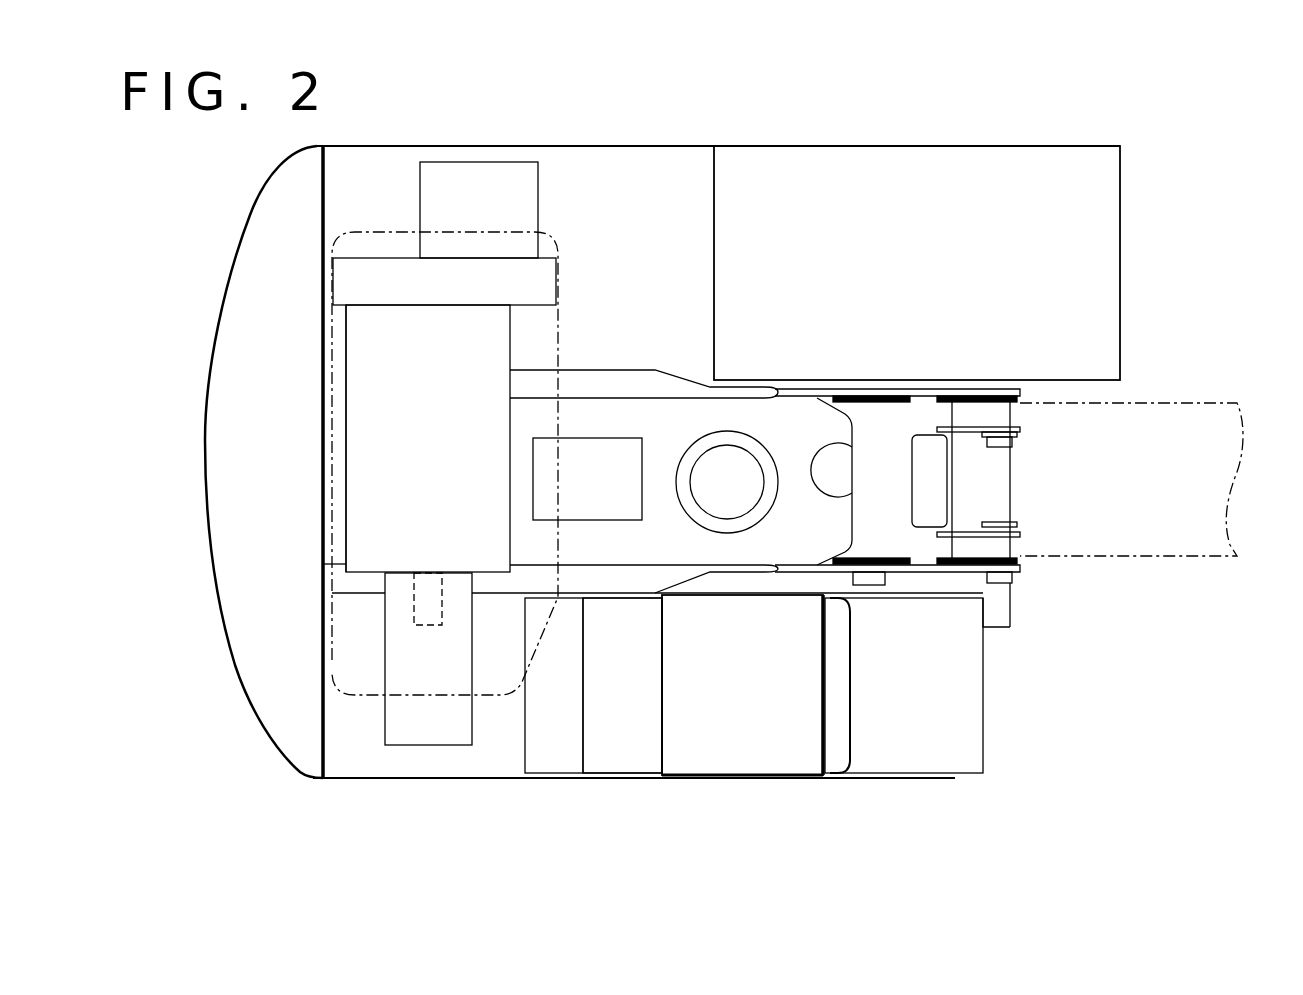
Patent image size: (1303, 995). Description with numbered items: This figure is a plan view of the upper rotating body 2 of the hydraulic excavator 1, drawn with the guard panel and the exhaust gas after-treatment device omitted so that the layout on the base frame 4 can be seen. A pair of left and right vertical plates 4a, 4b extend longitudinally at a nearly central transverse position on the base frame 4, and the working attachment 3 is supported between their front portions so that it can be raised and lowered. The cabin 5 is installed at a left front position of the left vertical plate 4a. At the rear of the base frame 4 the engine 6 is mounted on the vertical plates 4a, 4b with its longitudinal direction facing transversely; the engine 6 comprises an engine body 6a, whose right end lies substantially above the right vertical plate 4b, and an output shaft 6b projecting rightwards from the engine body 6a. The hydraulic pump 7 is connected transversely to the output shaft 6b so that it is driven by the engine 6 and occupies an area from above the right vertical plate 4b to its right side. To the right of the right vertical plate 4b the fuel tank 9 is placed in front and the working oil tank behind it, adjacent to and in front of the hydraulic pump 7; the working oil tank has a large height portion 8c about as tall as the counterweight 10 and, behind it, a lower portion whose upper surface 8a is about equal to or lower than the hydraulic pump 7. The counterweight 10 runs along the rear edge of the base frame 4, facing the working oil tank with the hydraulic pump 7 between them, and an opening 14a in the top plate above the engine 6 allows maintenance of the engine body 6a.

The hydraulic excavator 1 is at (1163, 148).
The upper rotating body 2 is at (996, 605).
The working attachment 3 is at (1197, 415).
The base frame 4 is at (650, 172).
The left vertical plate 4a is at (925, 388).
The right vertical plate 4b is at (940, 572).
The cabin 5 is at (1093, 240).
The engine 6 is at (370, 428).
The engine body 6a is at (356, 478).
The output shaft 6b is at (442, 590).
The hydraulic pump 7 is at (422, 725).
The upper surface 8a is at (543, 757).
The large height portion 8c is at (641, 757).
The fuel tank 9 is at (785, 748).
The counterweight 10 is at (270, 732).
The opening 14a is at (464, 238).